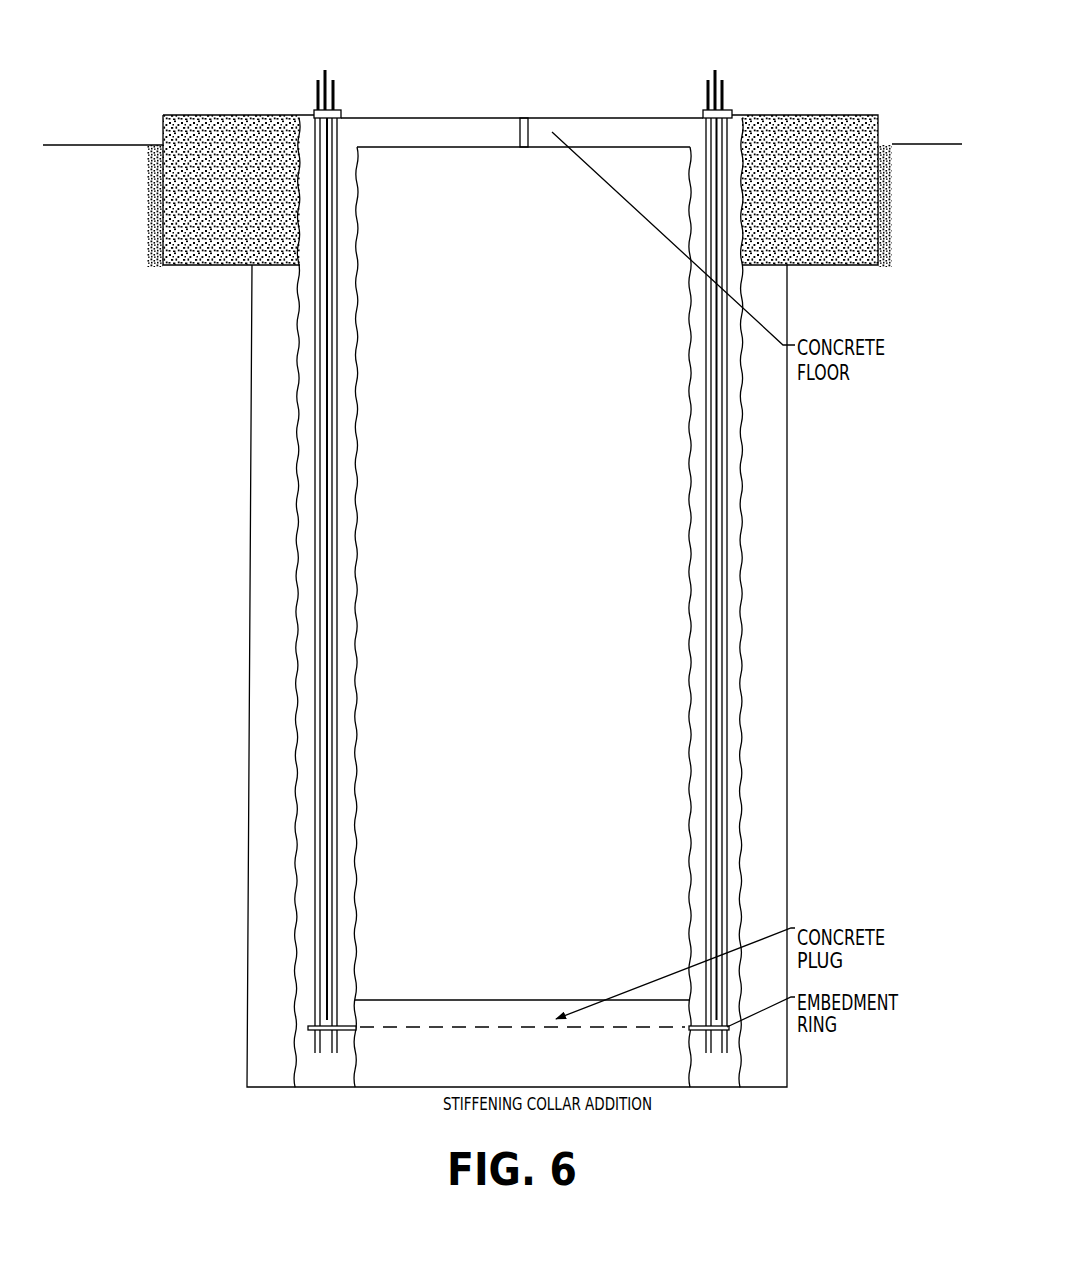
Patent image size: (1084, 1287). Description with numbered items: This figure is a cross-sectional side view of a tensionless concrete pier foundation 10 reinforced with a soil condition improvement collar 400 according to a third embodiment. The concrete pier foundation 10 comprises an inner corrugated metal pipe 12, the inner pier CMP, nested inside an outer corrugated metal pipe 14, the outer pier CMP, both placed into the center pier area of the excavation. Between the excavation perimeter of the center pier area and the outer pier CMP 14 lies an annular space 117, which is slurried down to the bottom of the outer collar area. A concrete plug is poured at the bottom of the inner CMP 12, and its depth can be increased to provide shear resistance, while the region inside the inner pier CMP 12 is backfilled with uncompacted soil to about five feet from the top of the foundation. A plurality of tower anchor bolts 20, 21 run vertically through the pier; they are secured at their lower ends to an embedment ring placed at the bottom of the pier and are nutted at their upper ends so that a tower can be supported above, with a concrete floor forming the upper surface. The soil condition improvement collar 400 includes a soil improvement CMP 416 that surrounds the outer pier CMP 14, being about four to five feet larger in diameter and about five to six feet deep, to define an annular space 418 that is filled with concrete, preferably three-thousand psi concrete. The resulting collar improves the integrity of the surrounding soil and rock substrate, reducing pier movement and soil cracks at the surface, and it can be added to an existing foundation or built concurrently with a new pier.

The concrete pier foundation 10 is at (272, 502).
The inner corrugated metal pipe 12 is at (700, 653).
The outer corrugated metal pipe 14 is at (747, 585).
The annular space 117 is at (755, 402).
The tower anchor bolt 20 is at (734, 454).
The tower anchor bolt 21 is at (719, 465).
The soil condition improvement collar 400 is at (869, 98).
The soil improvement corrugated metal pipe 416 is at (893, 240).
The annular space 418 is at (231, 152).